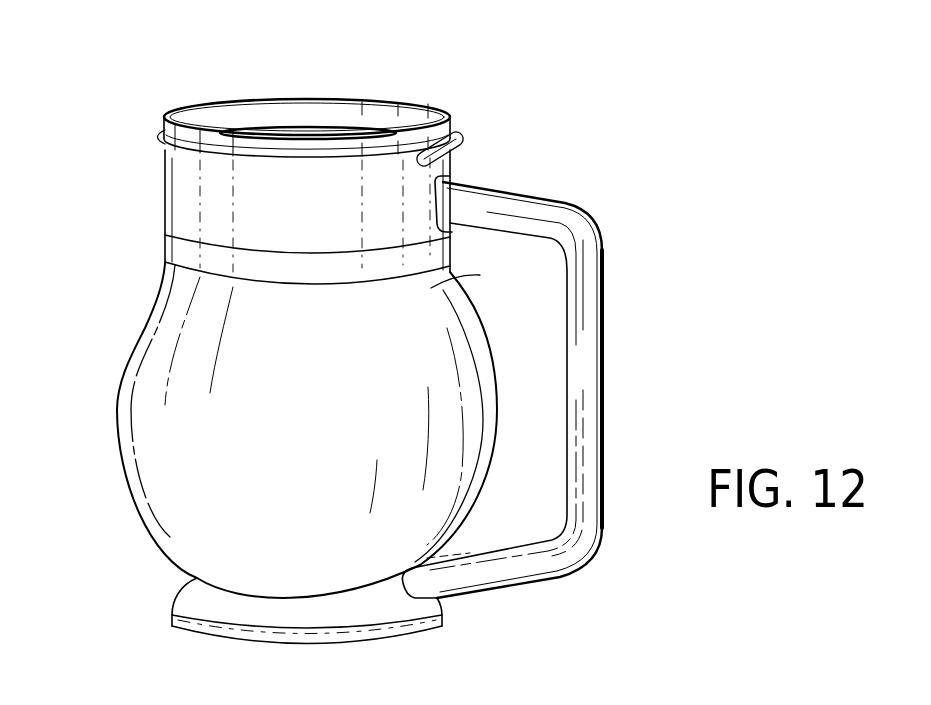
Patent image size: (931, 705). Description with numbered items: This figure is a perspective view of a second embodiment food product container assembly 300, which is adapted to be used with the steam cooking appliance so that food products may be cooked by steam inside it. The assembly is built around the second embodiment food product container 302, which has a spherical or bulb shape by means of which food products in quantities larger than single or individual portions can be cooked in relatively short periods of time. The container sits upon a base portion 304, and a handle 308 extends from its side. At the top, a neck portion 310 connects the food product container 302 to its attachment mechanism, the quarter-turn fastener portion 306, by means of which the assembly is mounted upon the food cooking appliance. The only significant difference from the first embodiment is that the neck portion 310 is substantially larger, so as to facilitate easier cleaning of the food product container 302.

The second embodiment food product container assembly 300 is at (528, 117).
The second embodiment food product container 302 is at (136, 338).
The base portion 304 is at (417, 634).
The quarter-turn fastener portion 306 is at (400, 99).
The handle 308 is at (603, 378).
The neck portion 310 is at (431, 288).